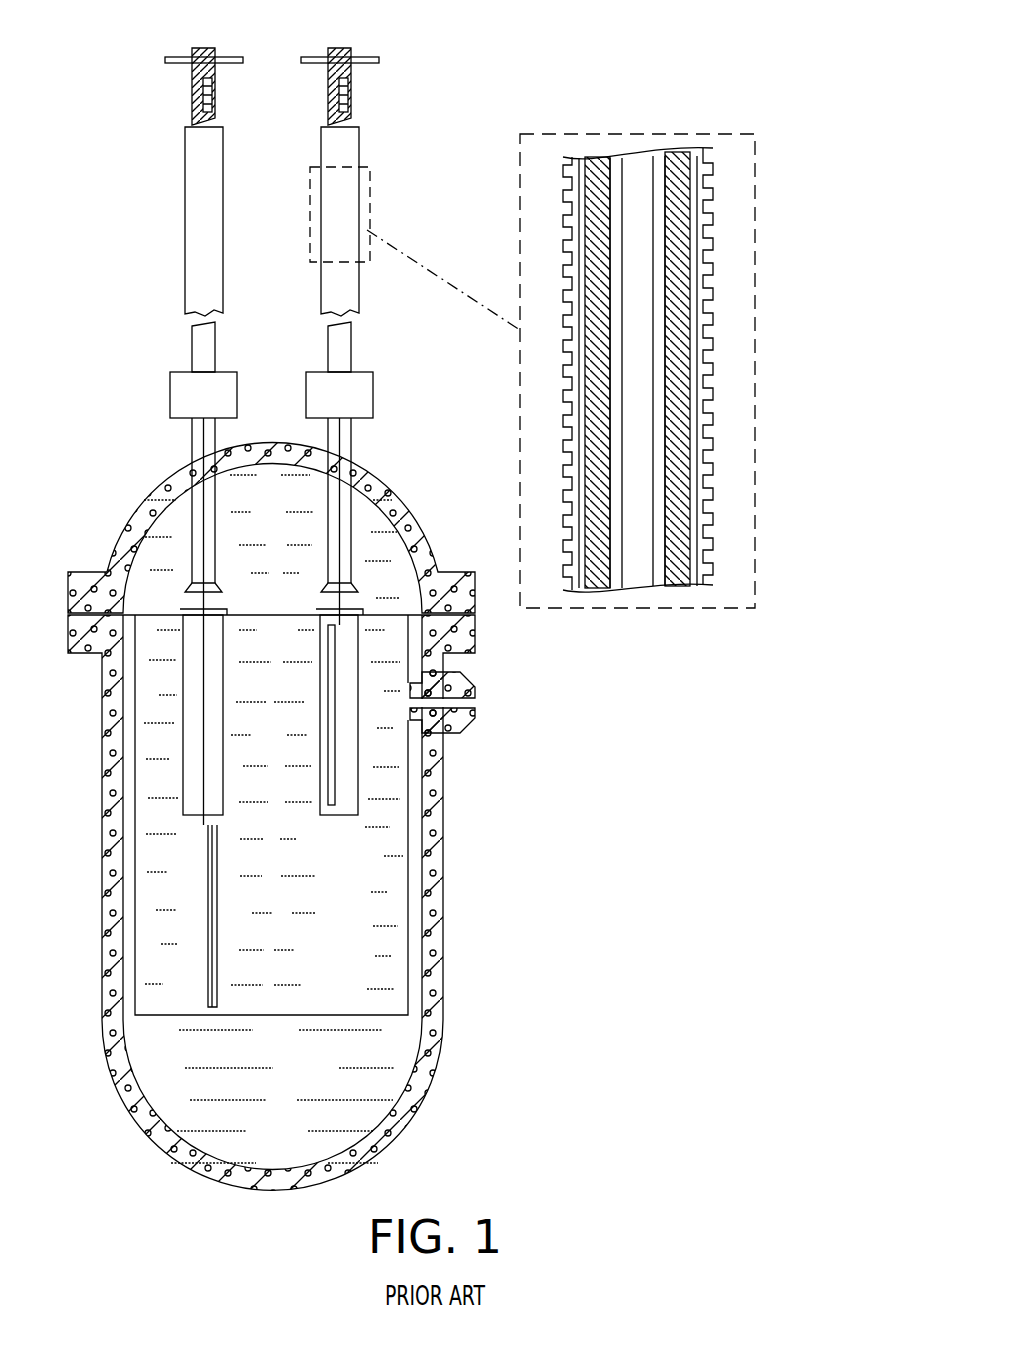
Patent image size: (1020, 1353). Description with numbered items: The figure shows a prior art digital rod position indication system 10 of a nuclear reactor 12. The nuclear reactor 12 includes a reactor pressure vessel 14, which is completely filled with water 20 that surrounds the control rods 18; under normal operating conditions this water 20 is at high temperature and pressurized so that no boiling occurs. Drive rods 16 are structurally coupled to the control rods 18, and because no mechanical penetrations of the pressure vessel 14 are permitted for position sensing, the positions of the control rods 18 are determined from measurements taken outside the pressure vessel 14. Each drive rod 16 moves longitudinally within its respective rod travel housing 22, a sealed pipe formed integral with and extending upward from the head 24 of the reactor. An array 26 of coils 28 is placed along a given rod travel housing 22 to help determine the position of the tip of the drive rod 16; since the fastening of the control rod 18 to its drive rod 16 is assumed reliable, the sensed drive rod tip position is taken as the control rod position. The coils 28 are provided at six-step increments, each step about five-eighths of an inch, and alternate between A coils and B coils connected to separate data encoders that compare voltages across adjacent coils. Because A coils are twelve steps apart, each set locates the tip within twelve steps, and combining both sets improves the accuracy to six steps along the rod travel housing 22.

The digital rod position indication system 10 is at (733, 78).
The nuclear reactor 12 is at (300, 783).
The reactor pressure vessel 14 is at (445, 953).
The drive rod 16 is at (203, 538).
The control rod 18 is at (207, 877).
The water 20 is at (412, 792).
The rod travel housing 22 is at (192, 102).
The head 24 is at (280, 443).
The array 26 is at (193, 155).
The coil 28 is at (713, 198).